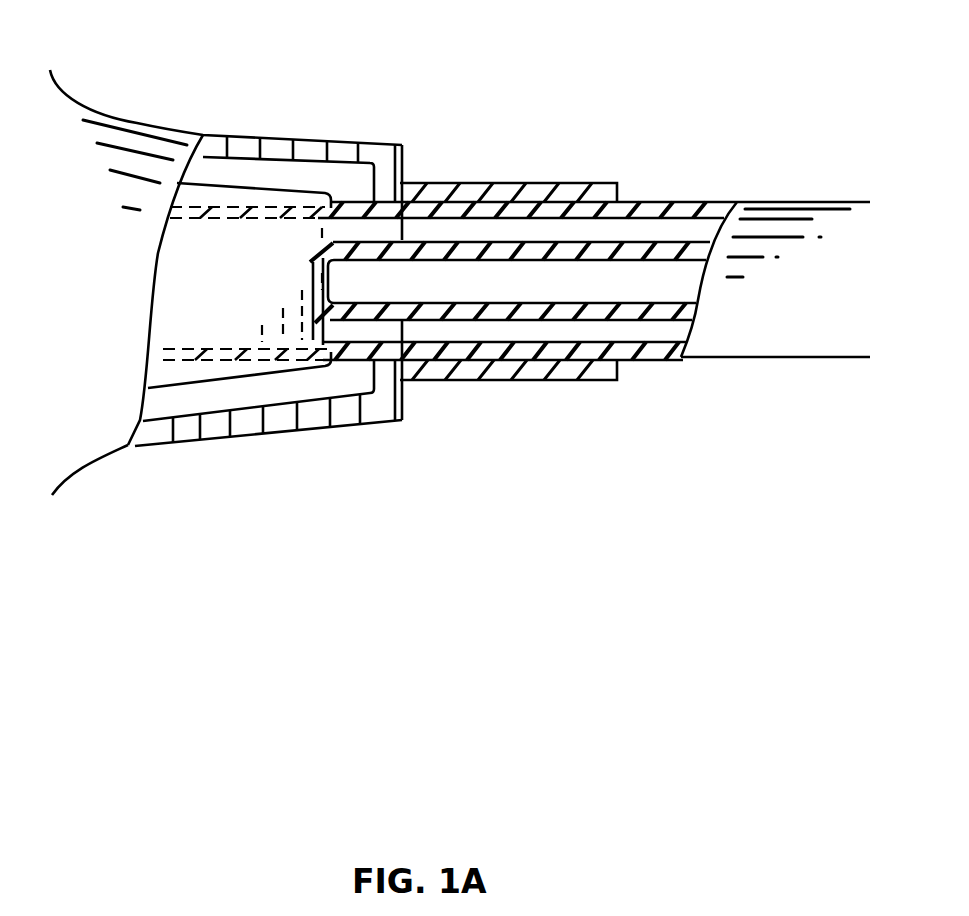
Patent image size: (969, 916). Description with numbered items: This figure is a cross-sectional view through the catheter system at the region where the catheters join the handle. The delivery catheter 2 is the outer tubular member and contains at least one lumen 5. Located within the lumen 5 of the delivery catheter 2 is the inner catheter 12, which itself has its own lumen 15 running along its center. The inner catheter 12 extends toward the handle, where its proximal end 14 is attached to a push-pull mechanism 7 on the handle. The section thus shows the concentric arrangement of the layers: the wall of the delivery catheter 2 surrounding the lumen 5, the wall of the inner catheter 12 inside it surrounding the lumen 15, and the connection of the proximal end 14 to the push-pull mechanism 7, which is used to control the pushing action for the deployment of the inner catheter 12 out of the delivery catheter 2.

The push-pull mechanism 7 is at (233, 185).
The proximal end 14 is at (338, 240).
The delivery catheter 2 is at (650, 202).
The inner catheter 12 is at (727, 207).
The lumen 15 is at (670, 285).
The lumen 5 is at (545, 332).